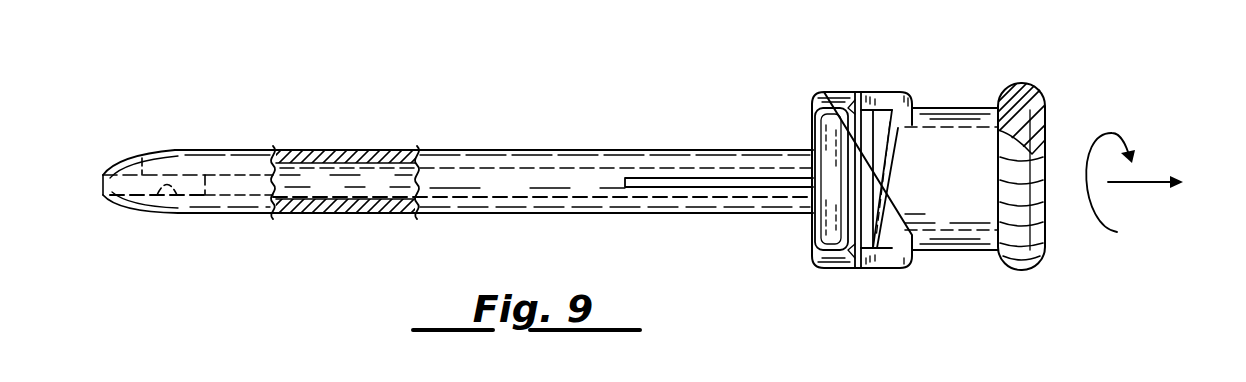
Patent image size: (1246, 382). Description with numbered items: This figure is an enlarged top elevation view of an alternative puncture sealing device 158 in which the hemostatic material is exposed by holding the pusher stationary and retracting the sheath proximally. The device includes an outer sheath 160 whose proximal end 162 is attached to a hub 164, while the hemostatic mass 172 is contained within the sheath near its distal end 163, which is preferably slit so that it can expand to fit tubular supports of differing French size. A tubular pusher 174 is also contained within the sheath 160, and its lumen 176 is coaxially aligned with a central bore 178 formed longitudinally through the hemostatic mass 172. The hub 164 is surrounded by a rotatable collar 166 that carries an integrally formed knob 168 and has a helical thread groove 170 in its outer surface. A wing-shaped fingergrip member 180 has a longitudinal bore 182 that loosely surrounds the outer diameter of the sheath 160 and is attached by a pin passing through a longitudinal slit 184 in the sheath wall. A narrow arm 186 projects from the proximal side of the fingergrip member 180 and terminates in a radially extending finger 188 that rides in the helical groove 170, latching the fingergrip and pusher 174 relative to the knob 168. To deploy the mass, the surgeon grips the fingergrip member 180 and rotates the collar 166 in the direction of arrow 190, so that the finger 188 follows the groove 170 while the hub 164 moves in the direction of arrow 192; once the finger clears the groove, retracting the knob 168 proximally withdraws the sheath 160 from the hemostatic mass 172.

The puncture sealing device 158 is at (531, 143).
The outer sheath 160 is at (487, 150).
The proximal end 162 is at (857, 92).
The distal end 163 is at (103, 186).
The hub 164 is at (1040, 130).
The rotatable collar 166 is at (980, 110).
The knob 168 is at (1020, 266).
The helical thread groove 170 is at (902, 128).
The hemostatic mass 172 is at (143, 157).
The tubular pusher 174 is at (340, 152).
The lumen 176 is at (328, 189).
The central bore 178 is at (177, 200).
The fingergrip member 180 is at (830, 227).
The longitudinal bore 182 is at (836, 148).
The longitudinal slit 184 is at (663, 180).
The narrow arm 186 is at (888, 92).
The finger 188 is at (900, 153).
The arrow 190 is at (1128, 205).
The arrow 192 is at (1148, 178).